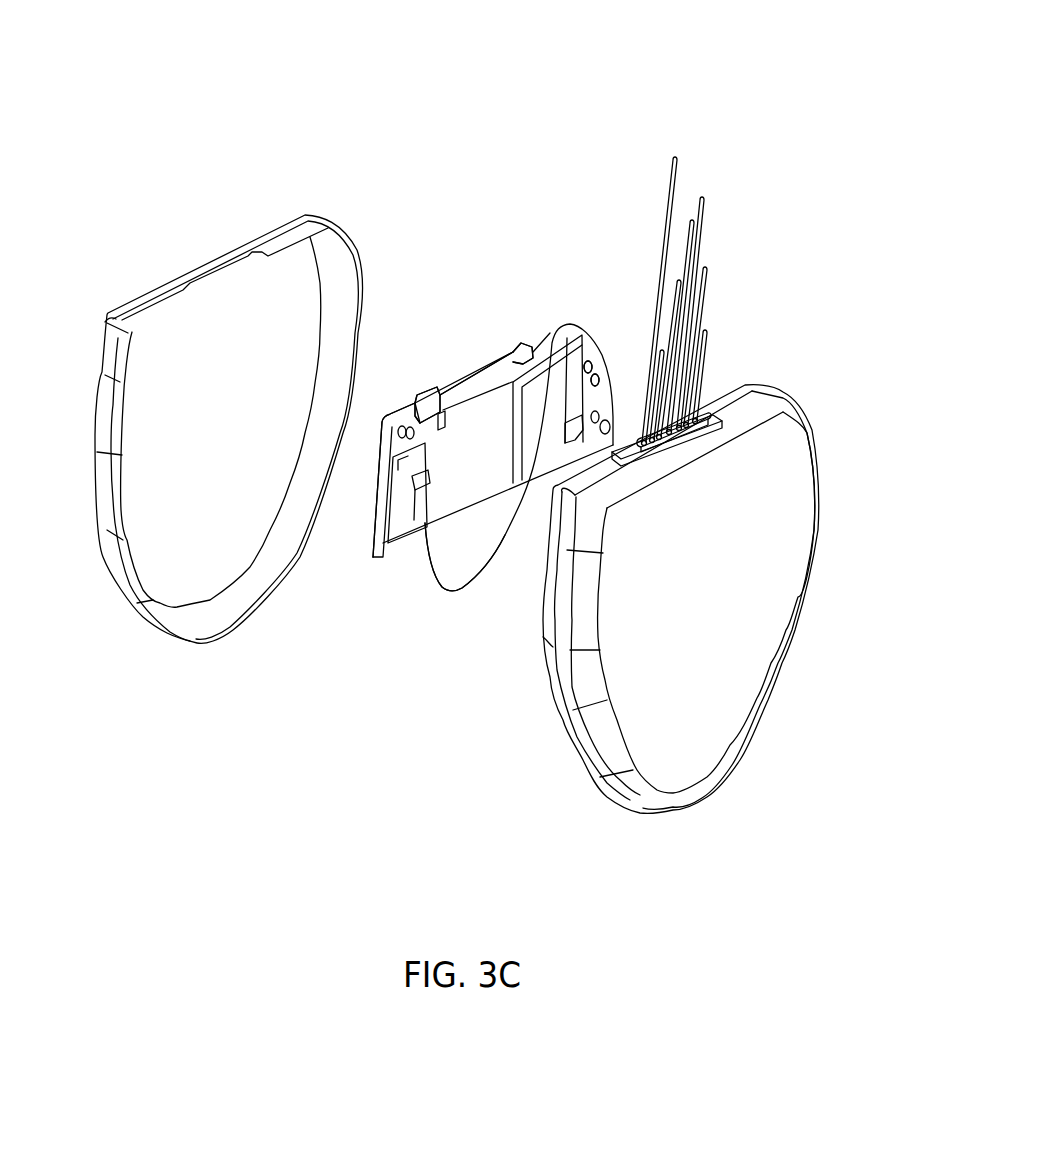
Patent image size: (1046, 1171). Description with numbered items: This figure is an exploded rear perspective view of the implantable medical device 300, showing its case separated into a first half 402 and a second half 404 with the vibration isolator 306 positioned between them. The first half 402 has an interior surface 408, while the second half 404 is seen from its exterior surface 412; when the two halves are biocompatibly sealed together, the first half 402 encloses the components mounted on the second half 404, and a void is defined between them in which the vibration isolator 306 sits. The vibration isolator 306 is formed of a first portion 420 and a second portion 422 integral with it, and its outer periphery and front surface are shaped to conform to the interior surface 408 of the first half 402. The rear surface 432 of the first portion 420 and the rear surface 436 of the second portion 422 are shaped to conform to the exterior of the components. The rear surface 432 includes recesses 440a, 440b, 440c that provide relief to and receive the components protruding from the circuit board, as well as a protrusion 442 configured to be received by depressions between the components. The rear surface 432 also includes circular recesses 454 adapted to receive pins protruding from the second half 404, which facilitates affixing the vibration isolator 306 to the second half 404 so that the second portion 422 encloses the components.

The implantable medical device 300 is at (808, 104).
The vibration isolator 306 is at (523, 332).
The first half 402 is at (142, 288).
The second half 404 is at (764, 382).
The interior surface 408 is at (229, 417).
The exterior surface 412 is at (668, 397).
The first portion 420 is at (372, 504).
The second portion 422 is at (466, 588).
The rear surface 432 is at (469, 465).
The rear surface 436 is at (519, 457).
The recess 440a is at (554, 370).
The recess 440b is at (470, 430).
The recess 440c is at (412, 413).
The protrusion 442 is at (424, 492).
The circular recesses 454 is at (604, 420).